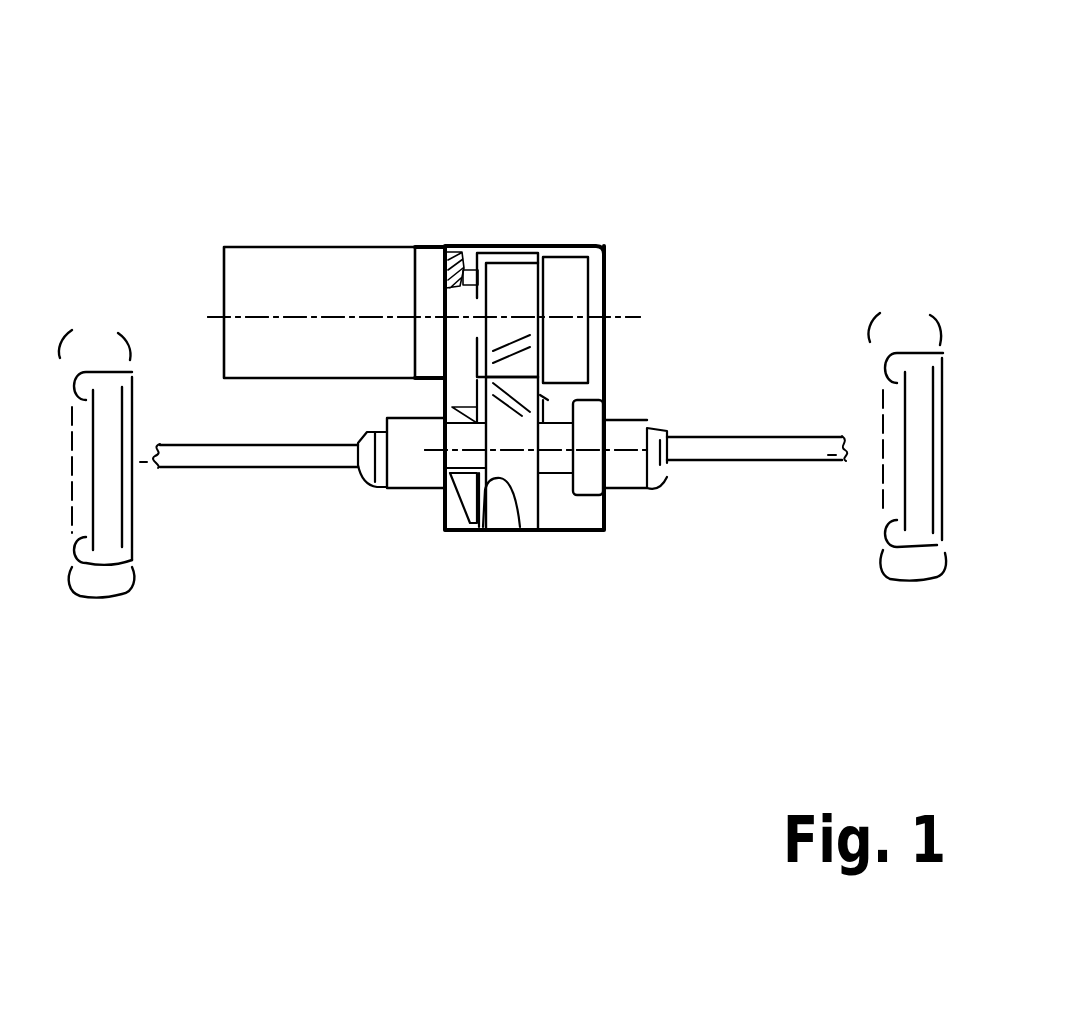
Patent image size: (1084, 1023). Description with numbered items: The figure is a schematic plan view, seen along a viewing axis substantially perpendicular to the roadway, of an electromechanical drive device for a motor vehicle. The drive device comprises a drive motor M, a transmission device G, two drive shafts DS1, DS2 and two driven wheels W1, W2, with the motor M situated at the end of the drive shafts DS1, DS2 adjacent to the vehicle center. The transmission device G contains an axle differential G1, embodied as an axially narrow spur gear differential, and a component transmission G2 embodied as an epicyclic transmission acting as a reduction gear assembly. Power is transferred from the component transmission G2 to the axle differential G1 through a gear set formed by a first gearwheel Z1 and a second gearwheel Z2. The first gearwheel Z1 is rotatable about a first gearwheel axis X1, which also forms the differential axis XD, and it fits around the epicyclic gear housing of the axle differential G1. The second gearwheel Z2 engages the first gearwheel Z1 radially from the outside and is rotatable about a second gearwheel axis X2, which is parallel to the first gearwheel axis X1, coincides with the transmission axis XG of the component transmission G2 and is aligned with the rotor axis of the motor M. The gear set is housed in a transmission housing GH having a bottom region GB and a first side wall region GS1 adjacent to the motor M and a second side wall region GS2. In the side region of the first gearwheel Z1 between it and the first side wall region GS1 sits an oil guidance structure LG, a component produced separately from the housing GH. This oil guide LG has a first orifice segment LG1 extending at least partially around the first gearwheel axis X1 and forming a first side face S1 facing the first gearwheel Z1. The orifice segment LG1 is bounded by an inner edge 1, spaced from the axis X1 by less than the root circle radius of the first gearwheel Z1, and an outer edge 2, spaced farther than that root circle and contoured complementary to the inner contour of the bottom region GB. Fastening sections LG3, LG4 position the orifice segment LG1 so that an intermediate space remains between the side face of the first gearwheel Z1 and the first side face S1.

The drive motor M is at (350, 262).
The transmission device G is at (603, 263).
The transmission housing GH is at (488, 210).
The bottom region GB is at (605, 380).
The axle differential G1 is at (547, 482).
The component transmission G2 is at (575, 220).
The first gearwheel Z1 is at (540, 505).
The second gearwheel Z2 is at (516, 284).
The first side wall region GS1 is at (455, 533).
The second side wall region GS2 is at (606, 356).
The oil guidance structure LG is at (406, 621).
The first orifice segment LG1 is at (470, 540).
The fastening section LG3 is at (466, 412).
The fastening section LG4 is at (457, 235).
The first side face S1 is at (468, 512).
The inner edge 1 is at (517, 480).
The outer edge 2 is at (484, 526).
The first gearwheel axis X1 is at (591, 509).
The differential axis XD is at (631, 452).
The second gearwheel axis X2 is at (500, 276).
The transmission axis XG is at (606, 320).
The drive shaft DS1 is at (261, 466).
The drive shaft DS2 is at (757, 440).
The driven wheel W1 is at (90, 580).
The driven wheel W2 is at (902, 562).